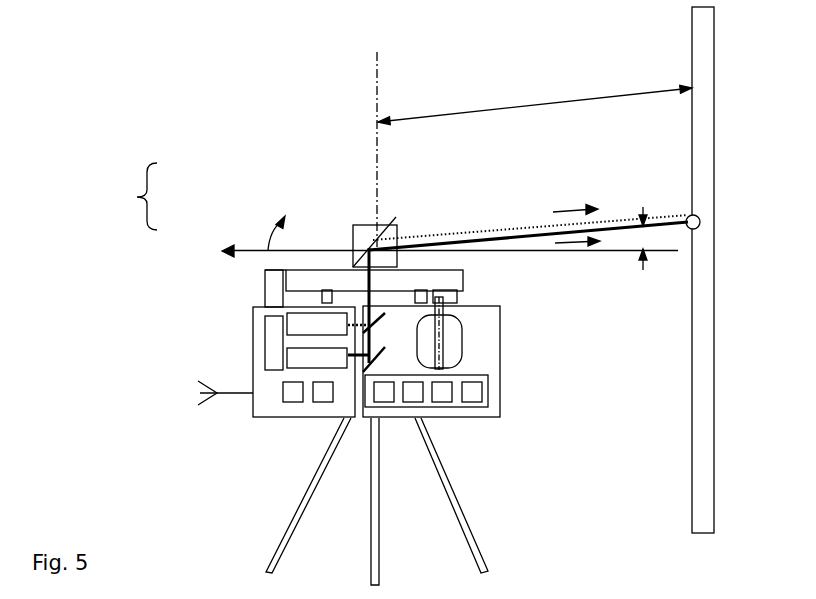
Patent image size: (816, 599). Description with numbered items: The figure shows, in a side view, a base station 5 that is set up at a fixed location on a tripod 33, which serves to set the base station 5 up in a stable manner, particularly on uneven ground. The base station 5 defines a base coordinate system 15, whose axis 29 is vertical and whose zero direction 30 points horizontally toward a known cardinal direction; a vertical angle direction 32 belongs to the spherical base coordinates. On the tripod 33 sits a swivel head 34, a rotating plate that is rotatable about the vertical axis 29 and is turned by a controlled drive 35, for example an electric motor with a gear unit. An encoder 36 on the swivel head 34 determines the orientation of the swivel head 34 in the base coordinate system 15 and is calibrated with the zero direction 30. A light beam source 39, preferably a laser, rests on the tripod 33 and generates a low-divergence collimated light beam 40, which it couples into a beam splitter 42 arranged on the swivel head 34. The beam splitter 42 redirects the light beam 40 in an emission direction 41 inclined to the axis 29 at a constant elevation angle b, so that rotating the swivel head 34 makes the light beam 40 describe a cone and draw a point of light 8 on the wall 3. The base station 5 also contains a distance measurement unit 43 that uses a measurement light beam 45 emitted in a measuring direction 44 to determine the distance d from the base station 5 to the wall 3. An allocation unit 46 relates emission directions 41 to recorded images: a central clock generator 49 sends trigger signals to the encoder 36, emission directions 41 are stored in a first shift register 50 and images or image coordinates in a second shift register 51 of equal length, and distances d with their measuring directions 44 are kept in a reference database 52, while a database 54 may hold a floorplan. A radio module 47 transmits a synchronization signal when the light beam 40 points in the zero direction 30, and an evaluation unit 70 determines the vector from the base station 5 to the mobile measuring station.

The base station 5 is at (153, 70).
The wall 3 is at (703, 125).
The point of light 8 is at (703, 220).
The axis 29 is at (376, 148).
The base coordinate system 15 is at (195, 210).
The vertical angle direction 32 is at (267, 236).
The zero direction 30 is at (230, 246).
The swivel head 34 is at (320, 282).
The encoder 36 is at (277, 298).
The distance measurement unit 43 is at (303, 323).
The light beam source 39 is at (305, 360).
The beam splitter 42 is at (366, 228).
The light beam 40 is at (488, 240).
The measurement light beam 45 is at (512, 230).
The emission direction 41 is at (567, 242).
The measuring direction 44 is at (577, 210).
The drive 35 is at (452, 340).
The radio module 47 is at (232, 393).
The evaluation unit 70 is at (295, 393).
The database 54 is at (323, 393).
The allocation unit 46 is at (362, 412).
The central clock generator 49 is at (377, 393).
The first shift register 50 is at (413, 393).
The second shift register 51 is at (443, 392).
The reference database 52 is at (477, 397).
The tripod 33 is at (450, 490).
The distance d is at (520, 107).
The elevation angle b is at (640, 236).